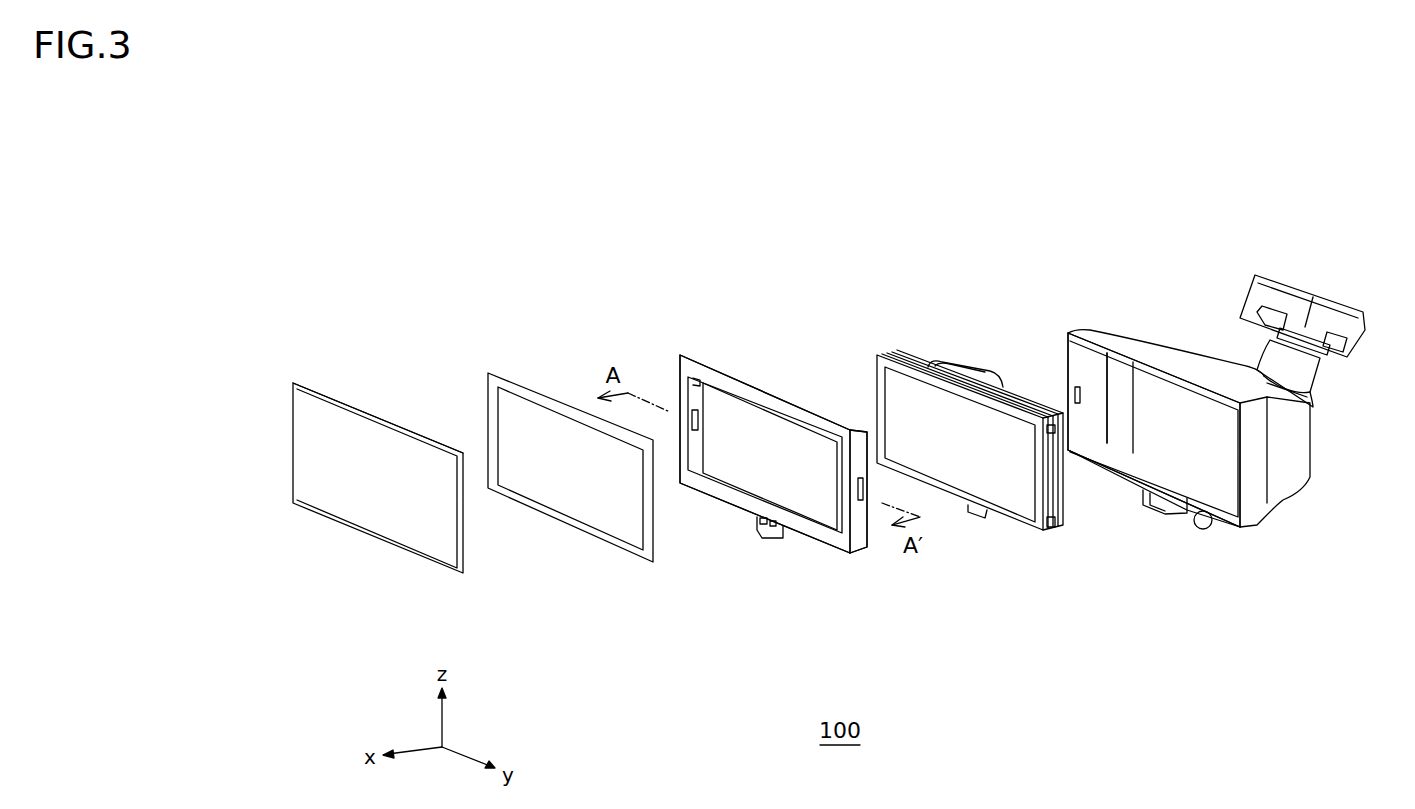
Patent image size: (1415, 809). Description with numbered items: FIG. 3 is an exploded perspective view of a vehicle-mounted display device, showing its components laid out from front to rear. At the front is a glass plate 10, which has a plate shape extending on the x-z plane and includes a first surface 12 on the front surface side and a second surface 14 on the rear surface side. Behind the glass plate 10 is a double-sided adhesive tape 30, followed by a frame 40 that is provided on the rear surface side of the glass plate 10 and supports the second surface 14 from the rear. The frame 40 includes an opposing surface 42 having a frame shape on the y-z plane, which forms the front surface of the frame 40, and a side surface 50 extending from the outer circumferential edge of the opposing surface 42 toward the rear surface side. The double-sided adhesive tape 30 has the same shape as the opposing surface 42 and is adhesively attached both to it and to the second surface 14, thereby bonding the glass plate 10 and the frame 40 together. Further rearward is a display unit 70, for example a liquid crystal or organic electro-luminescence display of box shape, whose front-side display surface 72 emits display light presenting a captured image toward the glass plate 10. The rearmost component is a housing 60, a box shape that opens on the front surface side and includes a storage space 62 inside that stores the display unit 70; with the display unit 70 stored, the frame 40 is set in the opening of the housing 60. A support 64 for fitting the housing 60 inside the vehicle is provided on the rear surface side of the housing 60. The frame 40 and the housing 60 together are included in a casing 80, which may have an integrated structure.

The glass plate 10 is at (370, 522).
The first surface 12 is at (330, 473).
The second surface 14 is at (383, 417).
The double-sided adhesive tape 30 is at (553, 513).
The frame 40 is at (783, 393).
The opposing surface 42 is at (737, 497).
The side surface 50 is at (860, 543).
The housing 60 is at (1152, 360).
The storage space 62 is at (1117, 380).
The support 64 is at (1357, 337).
The display unit 70 is at (952, 372).
The display surface 72 is at (965, 472).
The casing 80 is at (799, 317).